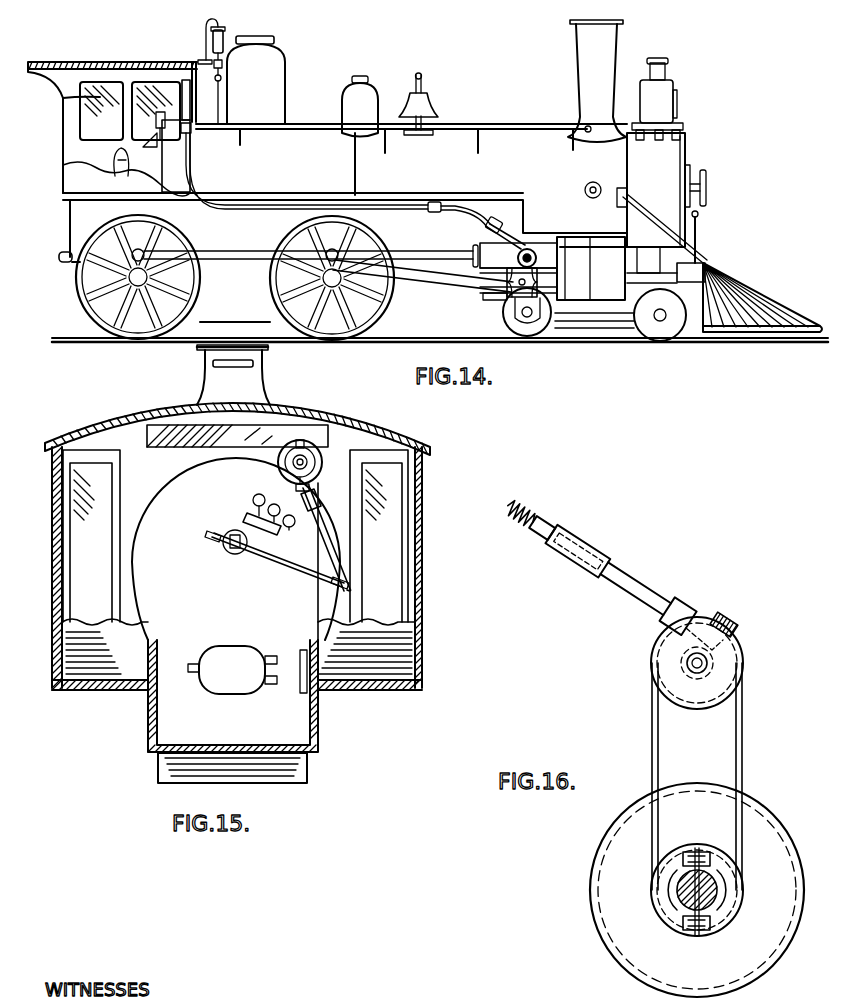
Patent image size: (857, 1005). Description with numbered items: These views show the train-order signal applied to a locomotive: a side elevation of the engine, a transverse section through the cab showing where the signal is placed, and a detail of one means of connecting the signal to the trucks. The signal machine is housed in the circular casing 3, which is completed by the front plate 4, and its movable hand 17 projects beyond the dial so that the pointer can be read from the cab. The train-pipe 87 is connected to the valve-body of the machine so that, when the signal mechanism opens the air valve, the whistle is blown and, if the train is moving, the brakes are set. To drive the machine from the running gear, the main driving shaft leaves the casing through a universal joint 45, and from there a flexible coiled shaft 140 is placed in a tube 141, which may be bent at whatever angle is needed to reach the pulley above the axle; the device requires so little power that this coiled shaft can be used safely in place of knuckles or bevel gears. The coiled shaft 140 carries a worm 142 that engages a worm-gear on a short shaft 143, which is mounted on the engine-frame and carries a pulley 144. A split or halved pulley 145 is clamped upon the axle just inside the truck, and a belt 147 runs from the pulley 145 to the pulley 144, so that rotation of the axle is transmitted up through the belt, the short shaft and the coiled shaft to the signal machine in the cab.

In FIG. 14, the circular casing 3 is at (196, 100).
In FIG. 14, the universal joint 45 is at (182, 110).
In FIG. 15, the universal joint 45 is at (296, 489).
In FIG. 14, the tube 141 is at (518, 236).
In FIG. 15, the tube 141 is at (321, 520).
In FIG. 16, the tube 141 is at (618, 560).
In FIG. 14, the worm 142 is at (540, 240).
In FIG. 16, the worm 142 is at (748, 614).
In FIG. 14, the pulley 144 is at (527, 251).
In FIG. 16, the pulley 144 is at (656, 651).
In FIG. 15, the movable hand 17 is at (313, 452).
In FIG. 15, the front plate 4 is at (278, 457).
In FIG. 15, the train-pipe 87 is at (317, 583).
In FIG. 16, the flexible coiled shaft 140 is at (533, 499).
In FIG. 16, the short shaft 143 is at (686, 663).
In FIG. 16, the belt 147 is at (656, 754).
In FIG. 16, the split pulley 145 is at (667, 917).